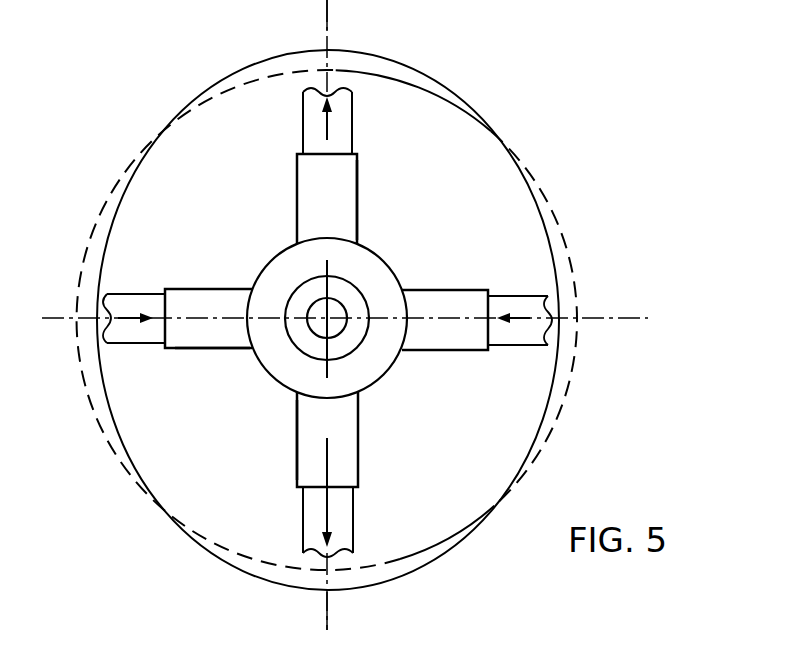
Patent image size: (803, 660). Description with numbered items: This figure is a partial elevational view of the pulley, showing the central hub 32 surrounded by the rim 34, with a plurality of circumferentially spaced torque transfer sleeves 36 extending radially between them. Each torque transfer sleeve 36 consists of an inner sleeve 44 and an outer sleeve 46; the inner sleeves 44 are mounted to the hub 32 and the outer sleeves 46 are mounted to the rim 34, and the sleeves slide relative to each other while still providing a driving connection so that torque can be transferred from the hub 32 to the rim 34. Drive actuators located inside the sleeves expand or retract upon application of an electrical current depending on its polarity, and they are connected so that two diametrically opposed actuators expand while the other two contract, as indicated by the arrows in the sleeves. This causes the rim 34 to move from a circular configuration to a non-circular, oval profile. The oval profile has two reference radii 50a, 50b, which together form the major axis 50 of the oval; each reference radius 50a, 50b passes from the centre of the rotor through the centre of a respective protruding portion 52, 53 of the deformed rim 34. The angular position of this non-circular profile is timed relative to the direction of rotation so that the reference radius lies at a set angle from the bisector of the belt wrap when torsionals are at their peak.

The hub 32 is at (375, 363).
The rim 34 is at (497, 137).
The torque transfer sleeve 36 is at (352, 192).
The inner sleeve 44 is at (302, 120).
The outer sleeve 46 is at (300, 183).
The major axis 50 is at (327, 476).
The reference radius 50a is at (328, 30).
The reference radius 50b is at (328, 593).
The protruding portion 52 is at (437, 557).
The protruding portion 53 is at (427, 72).